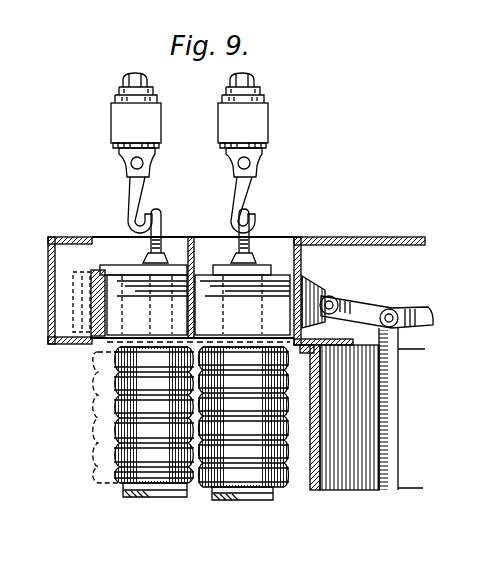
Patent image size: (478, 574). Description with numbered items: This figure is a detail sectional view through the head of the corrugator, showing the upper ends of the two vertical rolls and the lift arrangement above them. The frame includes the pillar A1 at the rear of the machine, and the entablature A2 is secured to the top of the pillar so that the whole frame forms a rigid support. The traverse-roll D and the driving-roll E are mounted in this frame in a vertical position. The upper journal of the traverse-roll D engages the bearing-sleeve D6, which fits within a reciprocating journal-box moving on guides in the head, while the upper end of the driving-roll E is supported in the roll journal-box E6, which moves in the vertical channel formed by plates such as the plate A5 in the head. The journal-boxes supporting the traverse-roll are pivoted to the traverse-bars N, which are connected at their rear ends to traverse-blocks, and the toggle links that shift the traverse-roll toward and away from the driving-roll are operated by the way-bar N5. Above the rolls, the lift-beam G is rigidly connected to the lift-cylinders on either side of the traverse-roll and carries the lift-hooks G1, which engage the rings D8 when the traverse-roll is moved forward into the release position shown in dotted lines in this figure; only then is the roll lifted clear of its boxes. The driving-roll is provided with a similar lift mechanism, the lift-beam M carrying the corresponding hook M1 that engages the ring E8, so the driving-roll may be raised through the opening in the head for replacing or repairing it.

The lift-beam G is at (110, 121).
The lift-beam M is at (262, 123).
The lift-hooks G1 is at (128, 197).
The hook of cell M M1 is at (244, 194).
The rings D8 is at (163, 216).
The pin contact of cell holder E E8 is at (254, 221).
The plate A5 is at (197, 249).
The entablature A2 is at (59, 290).
The bearing-sleeve D6 is at (143, 300).
The roll journal-box E6 is at (242, 300).
The traverse-bars N is at (361, 312).
The way-bar N5 is at (393, 408).
The pillar A1 is at (362, 468).
The traverse-roll D is at (112, 487).
The driving-roll E is at (270, 497).